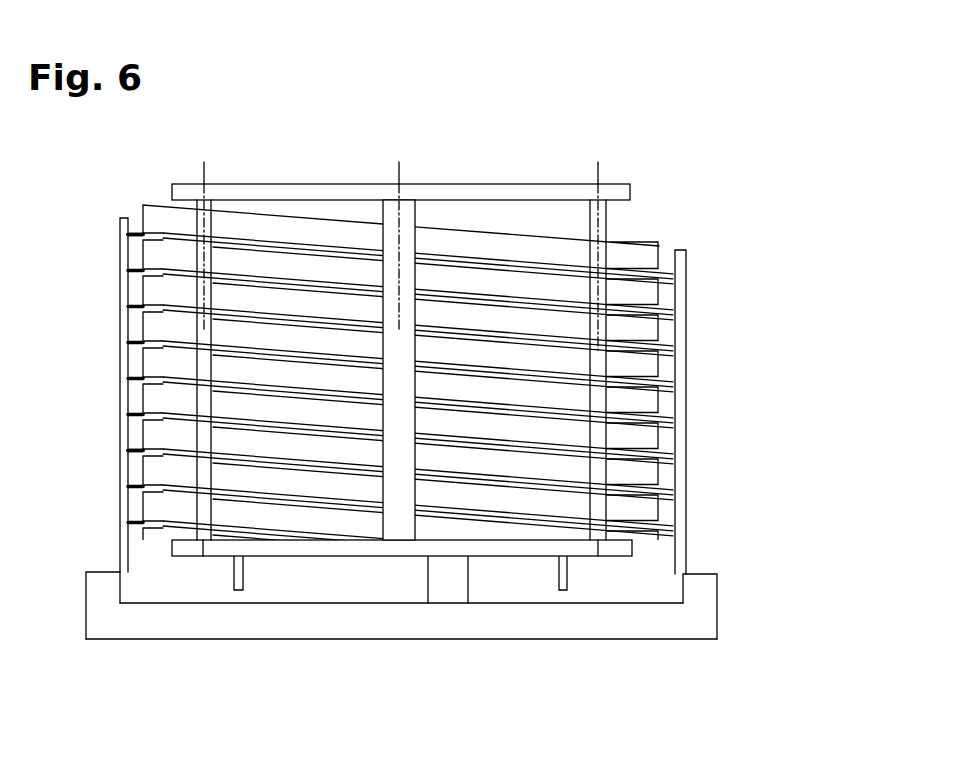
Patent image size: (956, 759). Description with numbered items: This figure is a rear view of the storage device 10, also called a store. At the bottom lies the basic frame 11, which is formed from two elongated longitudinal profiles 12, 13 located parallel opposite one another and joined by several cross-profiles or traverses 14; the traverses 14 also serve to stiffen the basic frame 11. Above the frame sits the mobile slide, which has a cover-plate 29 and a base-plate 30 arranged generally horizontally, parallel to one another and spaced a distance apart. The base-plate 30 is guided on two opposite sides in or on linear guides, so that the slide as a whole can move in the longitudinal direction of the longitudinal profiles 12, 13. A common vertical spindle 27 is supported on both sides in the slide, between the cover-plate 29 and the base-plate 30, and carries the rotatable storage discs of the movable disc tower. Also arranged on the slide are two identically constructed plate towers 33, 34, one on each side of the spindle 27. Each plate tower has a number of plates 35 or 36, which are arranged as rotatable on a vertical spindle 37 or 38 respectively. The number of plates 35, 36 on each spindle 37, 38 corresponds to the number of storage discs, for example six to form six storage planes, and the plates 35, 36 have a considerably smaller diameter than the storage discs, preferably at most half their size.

The storage device 10 is at (746, 343).
The basic frame 11 is at (706, 657).
The longitudinal profile 12 is at (695, 598).
The longitudinal profile 13 is at (100, 622).
The traverse 14 is at (390, 625).
The vertical spindle 27 is at (403, 167).
The cover-plate 29 is at (322, 192).
The base-plate 30 is at (220, 548).
The plate tower 33 is at (622, 222).
The plate tower 34 is at (184, 217).
The plates 35 is at (627, 278).
The plates 36 is at (173, 306).
The vertical spindle 37 is at (601, 167).
The vertical spindle 38 is at (207, 167).